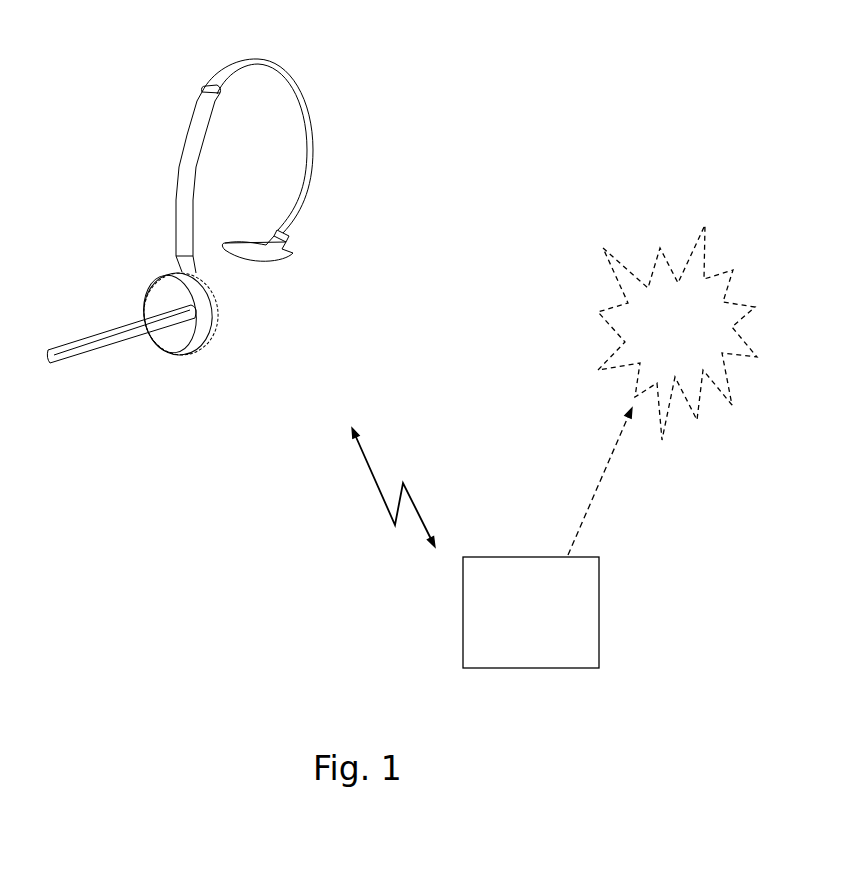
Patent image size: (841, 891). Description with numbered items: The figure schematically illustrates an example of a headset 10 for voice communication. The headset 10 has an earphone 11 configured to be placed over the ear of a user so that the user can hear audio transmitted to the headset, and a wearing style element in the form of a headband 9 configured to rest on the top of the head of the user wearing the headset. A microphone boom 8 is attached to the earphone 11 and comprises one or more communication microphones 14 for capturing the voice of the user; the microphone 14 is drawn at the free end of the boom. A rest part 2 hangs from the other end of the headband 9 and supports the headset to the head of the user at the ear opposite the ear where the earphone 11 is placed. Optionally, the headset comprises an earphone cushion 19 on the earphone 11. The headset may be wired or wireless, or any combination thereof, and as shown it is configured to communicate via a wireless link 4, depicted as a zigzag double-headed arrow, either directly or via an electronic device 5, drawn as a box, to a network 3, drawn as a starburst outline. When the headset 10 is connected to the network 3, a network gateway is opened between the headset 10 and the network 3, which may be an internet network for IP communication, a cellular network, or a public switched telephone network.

The headset 10 is at (177, 93).
The headband 9 is at (303, 87).
The rest part 2 is at (293, 253).
The earphone 11 is at (172, 290).
The earphone cushion 19 is at (187, 358).
The microphone boom 8 is at (118, 337).
The communication microphone 14 is at (48, 352).
The network 3 is at (647, 227).
The wireless link 4 is at (418, 485).
The electronic device 5 is at (465, 637).